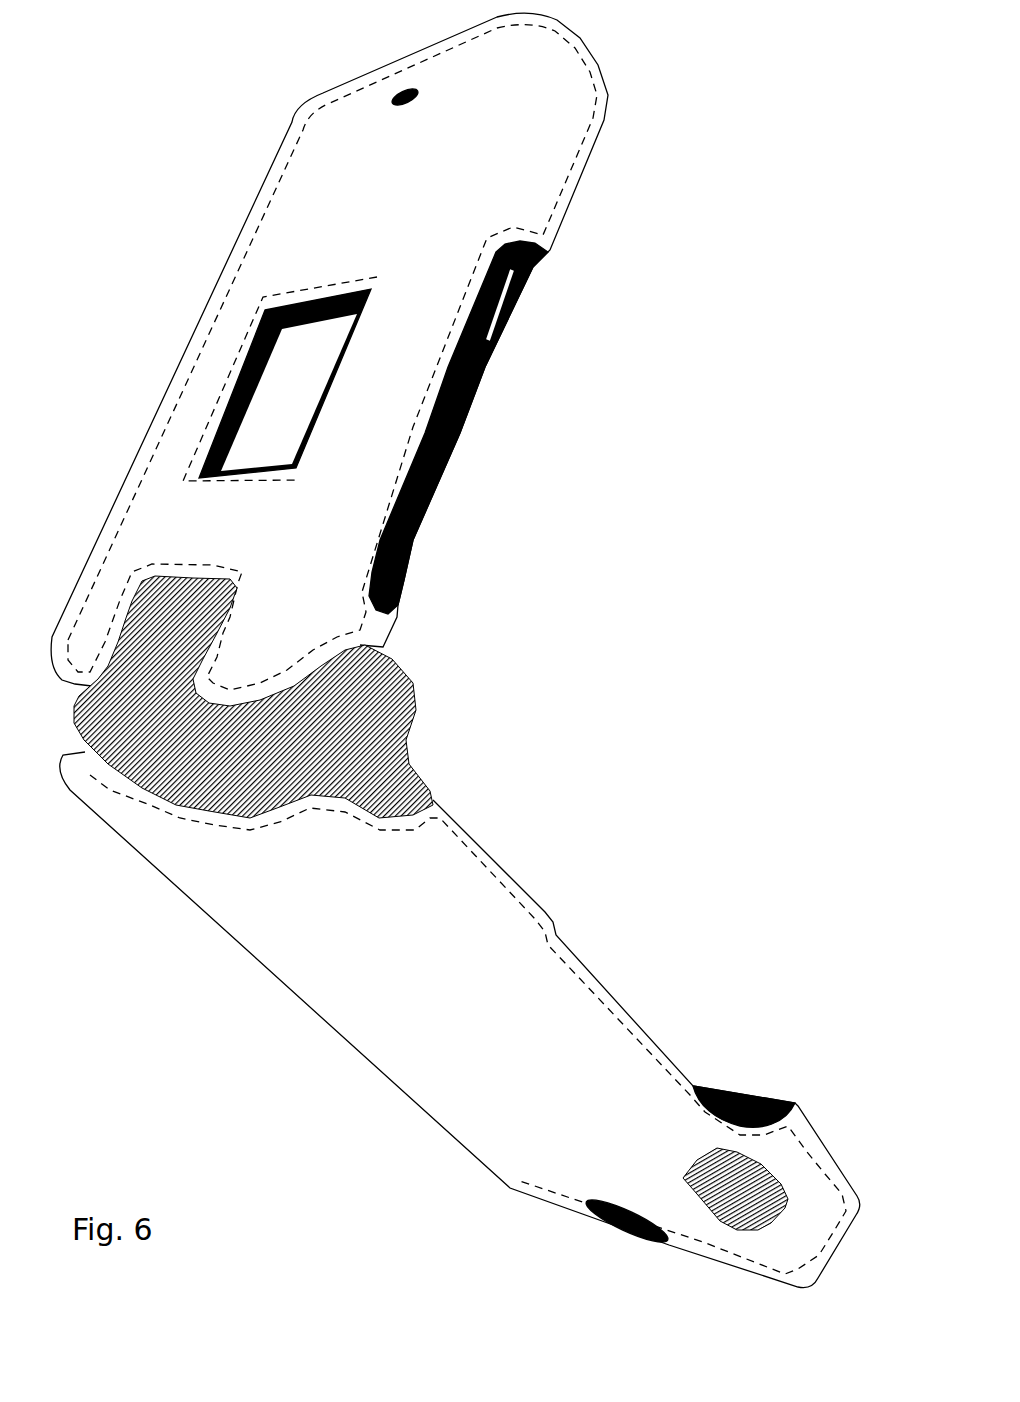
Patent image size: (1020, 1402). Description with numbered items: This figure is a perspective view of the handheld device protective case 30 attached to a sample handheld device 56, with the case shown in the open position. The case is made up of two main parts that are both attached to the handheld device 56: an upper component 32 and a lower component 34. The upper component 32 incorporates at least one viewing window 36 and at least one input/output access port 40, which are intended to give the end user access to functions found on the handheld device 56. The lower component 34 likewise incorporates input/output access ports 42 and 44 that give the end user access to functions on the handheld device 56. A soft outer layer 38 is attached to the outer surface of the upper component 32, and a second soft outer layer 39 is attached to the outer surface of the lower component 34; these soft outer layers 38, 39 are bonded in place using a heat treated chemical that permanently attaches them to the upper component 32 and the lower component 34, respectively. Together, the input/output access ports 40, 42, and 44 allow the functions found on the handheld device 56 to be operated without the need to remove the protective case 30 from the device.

The handheld device protective case 30 is at (727, 569).
The upper component 32 is at (293, 212).
The lower component 34 is at (392, 1036).
The viewing window 36 is at (300, 358).
The soft outer layer 38 is at (543, 145).
The soft outer layer 39 is at (489, 891).
The input/output access port 40 is at (480, 372).
The input/output access port 42 is at (741, 1150).
The input/output access port 44 is at (622, 1231).
The handheld device 56 is at (410, 714).